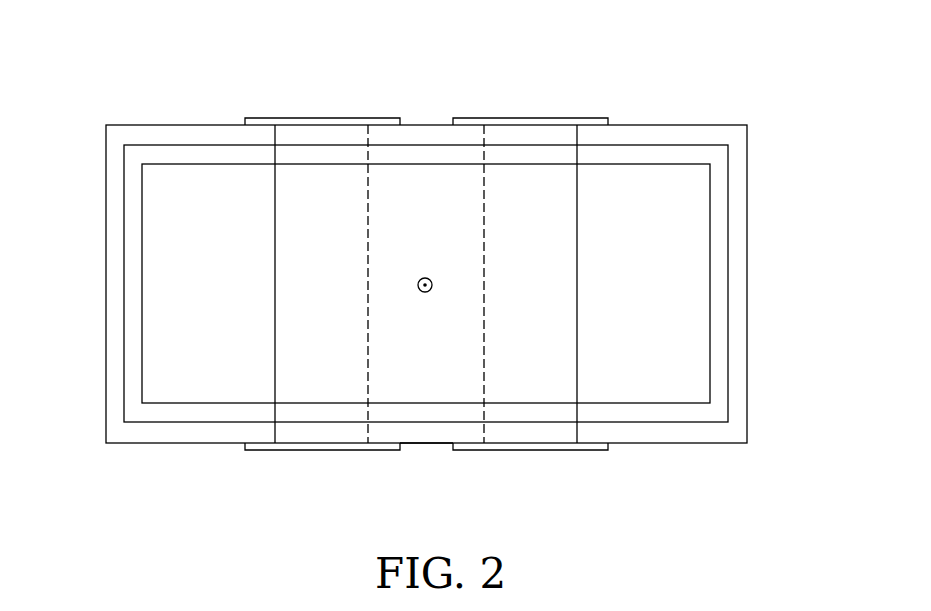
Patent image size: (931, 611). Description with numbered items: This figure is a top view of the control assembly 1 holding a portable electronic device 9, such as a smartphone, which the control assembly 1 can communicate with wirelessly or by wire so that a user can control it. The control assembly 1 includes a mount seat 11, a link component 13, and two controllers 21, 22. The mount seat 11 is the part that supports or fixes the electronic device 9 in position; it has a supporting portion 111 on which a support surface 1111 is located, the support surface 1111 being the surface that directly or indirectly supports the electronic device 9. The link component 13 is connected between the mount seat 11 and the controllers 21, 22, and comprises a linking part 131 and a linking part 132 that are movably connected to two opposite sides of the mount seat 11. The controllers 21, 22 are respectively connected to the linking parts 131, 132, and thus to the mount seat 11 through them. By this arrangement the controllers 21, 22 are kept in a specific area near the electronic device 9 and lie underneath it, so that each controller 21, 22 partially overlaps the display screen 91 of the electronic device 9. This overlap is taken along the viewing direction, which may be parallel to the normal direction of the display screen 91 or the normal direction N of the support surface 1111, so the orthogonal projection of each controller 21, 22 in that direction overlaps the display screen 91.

The control assembly 1 is at (92, 283).
The electronic device 9 is at (729, 203).
The display screen 91 is at (643, 278).
The mount seat 11 is at (428, 117).
The supporting portion 111 is at (426, 432).
The support surface 1111 is at (400, 332).
The link component 13 is at (350, 117).
The linking part 131 is at (297, 119).
The linking part 132 is at (541, 119).
The controller 21 is at (171, 432).
The controller 22 is at (688, 432).